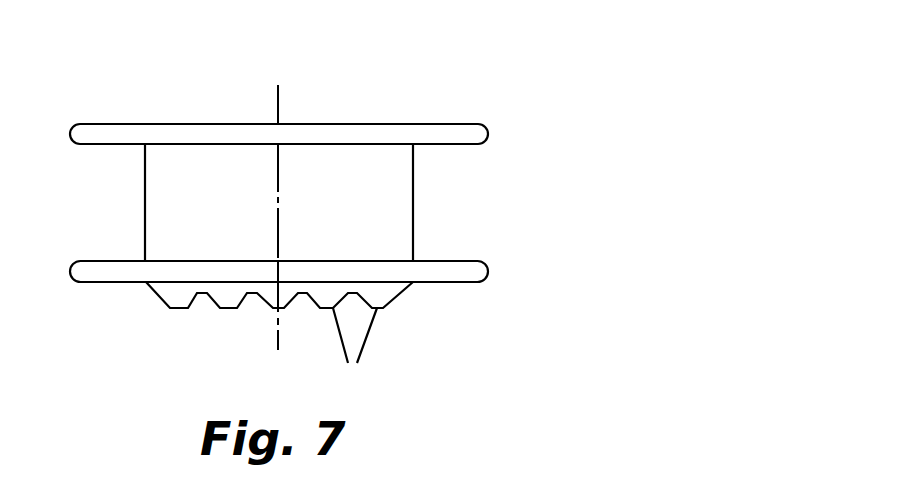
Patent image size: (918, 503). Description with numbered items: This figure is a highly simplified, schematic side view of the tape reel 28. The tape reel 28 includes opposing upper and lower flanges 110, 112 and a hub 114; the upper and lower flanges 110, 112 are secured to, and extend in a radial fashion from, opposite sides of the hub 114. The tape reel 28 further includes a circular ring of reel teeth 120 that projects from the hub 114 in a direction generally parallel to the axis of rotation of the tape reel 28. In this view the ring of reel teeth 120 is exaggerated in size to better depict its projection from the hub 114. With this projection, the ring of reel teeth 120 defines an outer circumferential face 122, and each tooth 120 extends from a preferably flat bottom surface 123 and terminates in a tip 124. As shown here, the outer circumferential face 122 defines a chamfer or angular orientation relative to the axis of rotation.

The tape reel 28 is at (490, 73).
The upper flange 110 is at (367, 134).
The lower flange 112 is at (473, 272).
The hub 114 is at (405, 201).
The ring of reel teeth 120 is at (283, 339).
The outer circumferential face 122 is at (157, 295).
The flat bottom surface 123 is at (445, 283).
The tip 124 is at (355, 352).